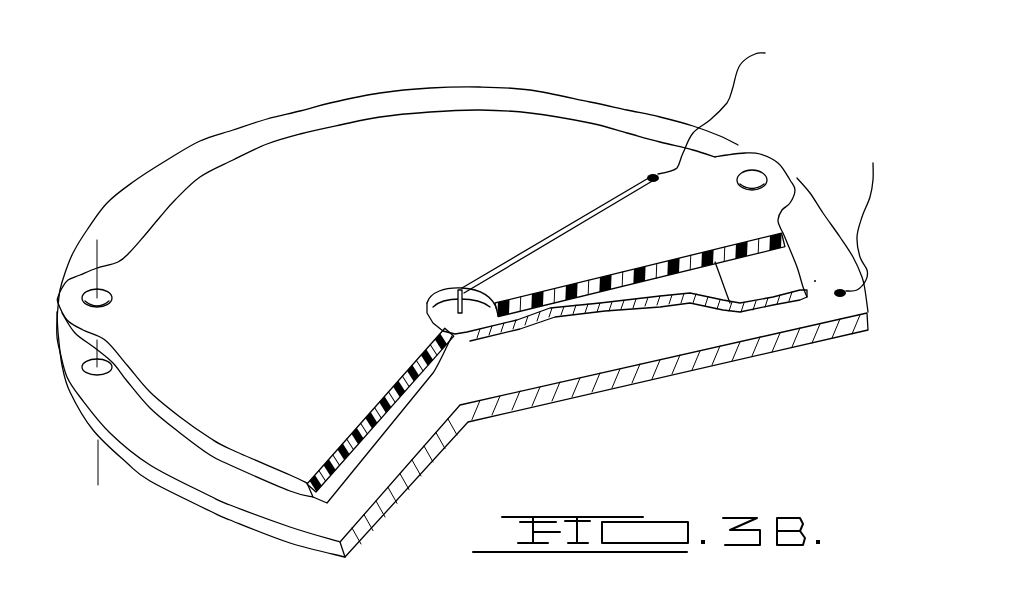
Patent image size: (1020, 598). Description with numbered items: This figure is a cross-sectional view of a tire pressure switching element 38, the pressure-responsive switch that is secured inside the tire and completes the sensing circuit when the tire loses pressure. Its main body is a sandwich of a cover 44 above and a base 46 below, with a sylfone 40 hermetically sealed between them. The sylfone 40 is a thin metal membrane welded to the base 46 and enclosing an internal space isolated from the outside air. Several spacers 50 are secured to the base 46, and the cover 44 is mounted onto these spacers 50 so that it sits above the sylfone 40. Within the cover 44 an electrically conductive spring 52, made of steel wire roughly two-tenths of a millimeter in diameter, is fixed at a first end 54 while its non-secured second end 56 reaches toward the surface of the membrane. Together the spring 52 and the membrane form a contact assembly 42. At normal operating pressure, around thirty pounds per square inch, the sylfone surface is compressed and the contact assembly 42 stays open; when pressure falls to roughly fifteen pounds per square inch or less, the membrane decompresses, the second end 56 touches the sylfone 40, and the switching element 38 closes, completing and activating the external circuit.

The switching element 38 is at (664, 73).
The sylfone 40 is at (323, 490).
The contact assembly 42 is at (463, 320).
The cover 44 is at (204, 198).
The base 46 is at (183, 497).
The spacers 50 is at (98, 480).
The electrically conductive spring 52 is at (527, 250).
The first end 54 is at (650, 177).
The second end 56 is at (462, 290).